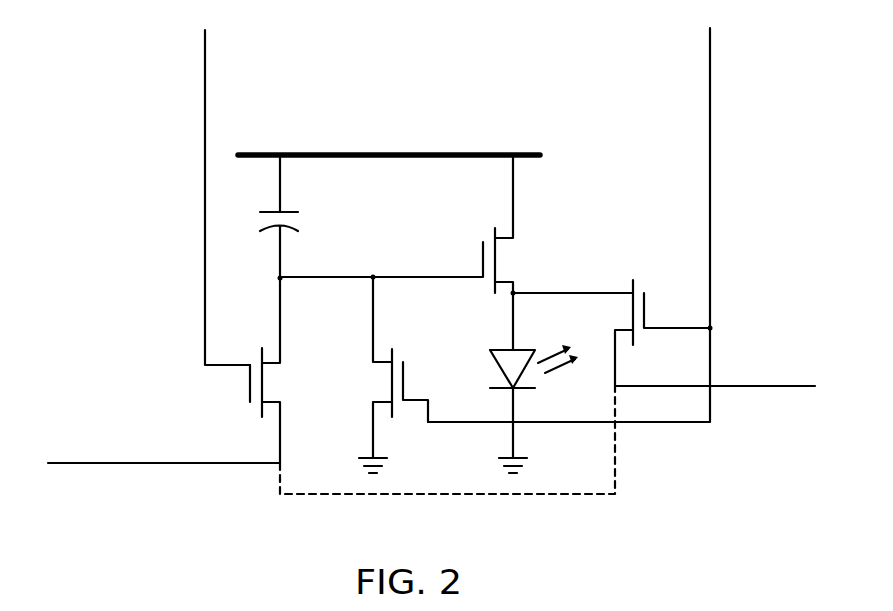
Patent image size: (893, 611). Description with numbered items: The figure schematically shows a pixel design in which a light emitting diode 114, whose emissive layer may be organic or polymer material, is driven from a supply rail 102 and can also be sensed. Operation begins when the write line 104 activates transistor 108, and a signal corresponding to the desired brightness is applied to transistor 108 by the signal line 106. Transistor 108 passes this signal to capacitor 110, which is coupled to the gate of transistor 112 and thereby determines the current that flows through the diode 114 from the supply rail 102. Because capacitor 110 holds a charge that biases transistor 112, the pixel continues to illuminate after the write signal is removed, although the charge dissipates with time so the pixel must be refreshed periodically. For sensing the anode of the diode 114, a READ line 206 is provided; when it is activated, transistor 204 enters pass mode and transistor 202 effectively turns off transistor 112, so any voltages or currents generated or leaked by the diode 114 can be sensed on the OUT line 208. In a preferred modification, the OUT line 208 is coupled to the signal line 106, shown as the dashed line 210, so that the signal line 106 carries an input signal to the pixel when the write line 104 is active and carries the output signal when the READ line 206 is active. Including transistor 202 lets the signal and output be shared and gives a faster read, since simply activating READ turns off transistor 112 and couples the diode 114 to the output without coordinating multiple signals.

The supply rail 102 is at (487, 153).
The write line 104 is at (205, 35).
The signal line 106 is at (75, 465).
The transistor 108 is at (272, 384).
The capacitor 110 is at (300, 221).
The transistor 112 is at (508, 263).
The light emitting diode 114 is at (522, 349).
The transistor 202 is at (398, 352).
The transistor 204 is at (640, 286).
The READ line 206 is at (710, 47).
The OUT line 208 is at (780, 388).
The dashed line 210 is at (583, 495).